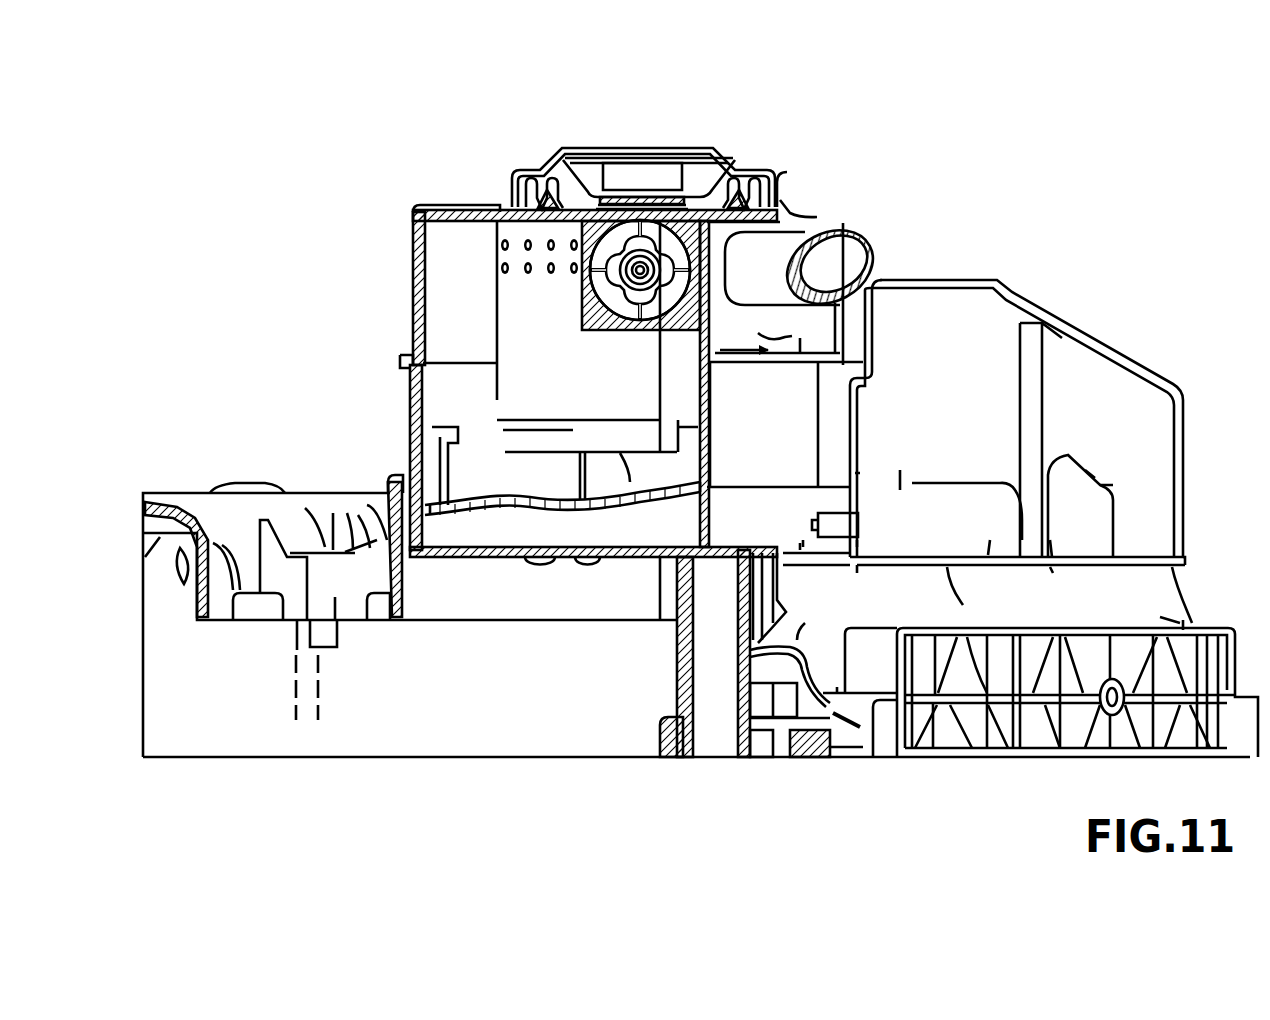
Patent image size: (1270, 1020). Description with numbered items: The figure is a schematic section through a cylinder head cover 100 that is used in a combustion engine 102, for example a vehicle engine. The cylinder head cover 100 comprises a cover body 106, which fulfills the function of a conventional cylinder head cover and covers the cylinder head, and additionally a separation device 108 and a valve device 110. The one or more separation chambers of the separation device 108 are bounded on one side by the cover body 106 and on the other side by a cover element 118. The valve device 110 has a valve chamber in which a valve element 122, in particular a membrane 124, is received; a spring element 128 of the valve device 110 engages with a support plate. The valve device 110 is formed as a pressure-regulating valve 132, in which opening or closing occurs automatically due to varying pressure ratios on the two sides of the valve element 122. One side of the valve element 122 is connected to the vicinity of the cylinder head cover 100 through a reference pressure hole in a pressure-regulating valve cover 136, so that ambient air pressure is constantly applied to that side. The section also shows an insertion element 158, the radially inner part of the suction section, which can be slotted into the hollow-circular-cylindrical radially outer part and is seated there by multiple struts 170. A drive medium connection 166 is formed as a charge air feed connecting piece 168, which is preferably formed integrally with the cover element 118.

The cylinder head cover 100 is at (985, 145).
The combustion engine 102 is at (1080, 185).
The cover body 106 is at (1100, 300).
The separation device 108 is at (400, 334).
The valve device 110 is at (592, 140).
The cover element 118 is at (448, 208).
The valve element 122 is at (562, 168).
The membrane 124 is at (582, 196).
The spring element 128 is at (650, 208).
The pressure-regulating valve 132 is at (620, 142).
The pressure-regulating valve cover 136 is at (690, 165).
The insertion element 158 is at (745, 172).
The drive medium connection 166 is at (790, 248).
The charge air feed connecting piece 168 is at (795, 232).
The struts 170 is at (588, 300).